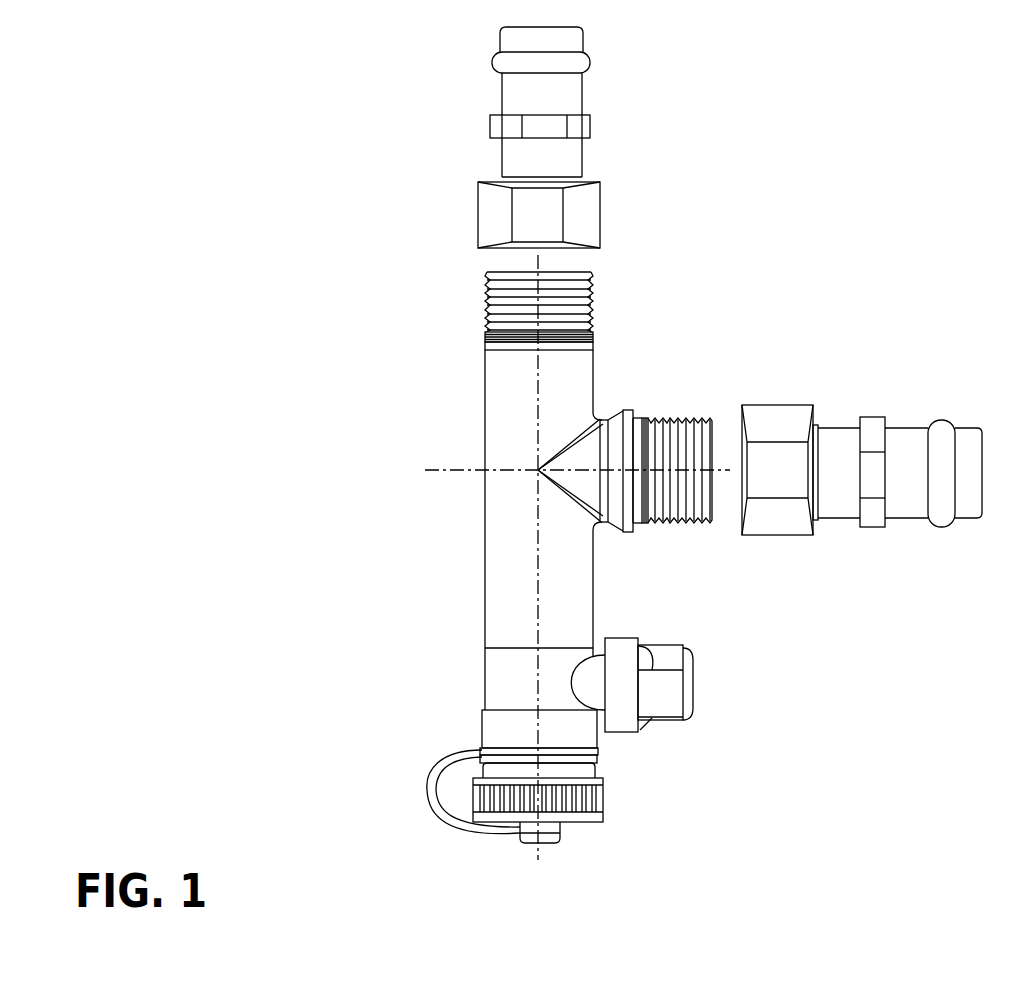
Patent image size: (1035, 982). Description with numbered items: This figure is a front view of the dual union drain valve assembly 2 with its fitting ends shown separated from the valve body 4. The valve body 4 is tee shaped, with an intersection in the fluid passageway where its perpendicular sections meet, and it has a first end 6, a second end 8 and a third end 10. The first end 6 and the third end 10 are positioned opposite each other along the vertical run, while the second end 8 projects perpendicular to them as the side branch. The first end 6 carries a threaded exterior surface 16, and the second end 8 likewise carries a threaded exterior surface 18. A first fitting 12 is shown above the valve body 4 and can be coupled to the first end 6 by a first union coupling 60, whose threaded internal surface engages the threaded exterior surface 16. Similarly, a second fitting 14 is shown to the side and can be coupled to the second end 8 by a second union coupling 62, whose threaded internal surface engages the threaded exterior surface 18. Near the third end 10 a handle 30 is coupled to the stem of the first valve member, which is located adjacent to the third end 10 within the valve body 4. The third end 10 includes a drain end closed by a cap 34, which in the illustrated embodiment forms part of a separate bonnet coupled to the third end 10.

The dual union drain valve assembly 2 is at (650, 349).
The valve body 4 is at (503, 530).
The first end 6 is at (583, 358).
The second end 8 is at (617, 415).
The third end 10 is at (500, 733).
The first fitting 12 is at (512, 157).
The second fitting 14 is at (840, 500).
The threaded exterior surface 16 is at (507, 302).
The threaded exterior surface 18 is at (670, 525).
The handle 30 is at (667, 695).
The cap 34 is at (603, 797).
The first union coupling 60 is at (488, 212).
The second union coupling 62 is at (780, 417).